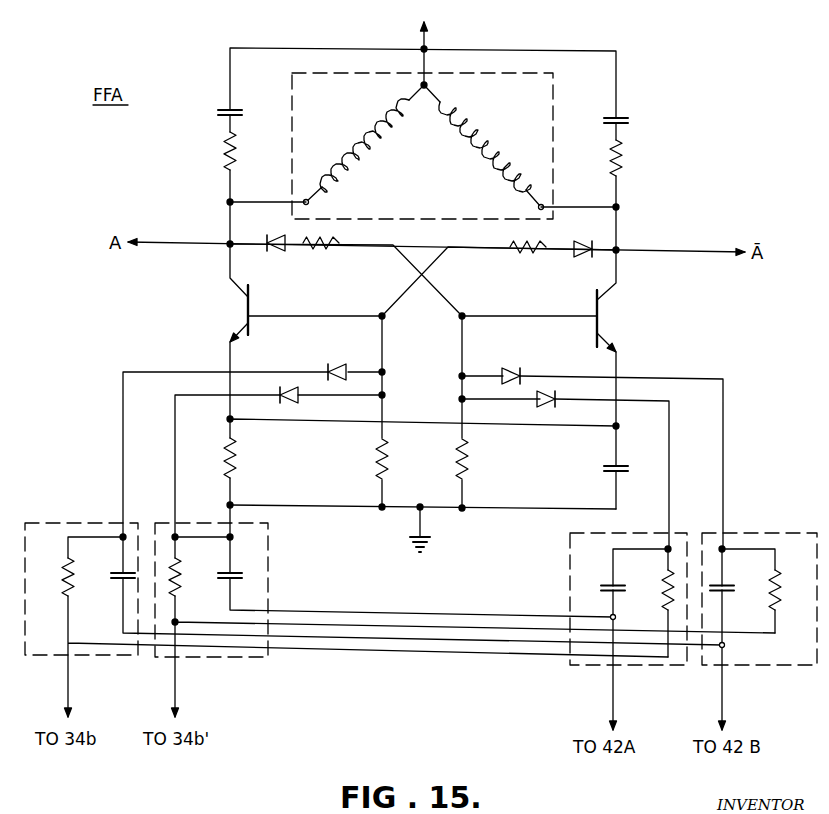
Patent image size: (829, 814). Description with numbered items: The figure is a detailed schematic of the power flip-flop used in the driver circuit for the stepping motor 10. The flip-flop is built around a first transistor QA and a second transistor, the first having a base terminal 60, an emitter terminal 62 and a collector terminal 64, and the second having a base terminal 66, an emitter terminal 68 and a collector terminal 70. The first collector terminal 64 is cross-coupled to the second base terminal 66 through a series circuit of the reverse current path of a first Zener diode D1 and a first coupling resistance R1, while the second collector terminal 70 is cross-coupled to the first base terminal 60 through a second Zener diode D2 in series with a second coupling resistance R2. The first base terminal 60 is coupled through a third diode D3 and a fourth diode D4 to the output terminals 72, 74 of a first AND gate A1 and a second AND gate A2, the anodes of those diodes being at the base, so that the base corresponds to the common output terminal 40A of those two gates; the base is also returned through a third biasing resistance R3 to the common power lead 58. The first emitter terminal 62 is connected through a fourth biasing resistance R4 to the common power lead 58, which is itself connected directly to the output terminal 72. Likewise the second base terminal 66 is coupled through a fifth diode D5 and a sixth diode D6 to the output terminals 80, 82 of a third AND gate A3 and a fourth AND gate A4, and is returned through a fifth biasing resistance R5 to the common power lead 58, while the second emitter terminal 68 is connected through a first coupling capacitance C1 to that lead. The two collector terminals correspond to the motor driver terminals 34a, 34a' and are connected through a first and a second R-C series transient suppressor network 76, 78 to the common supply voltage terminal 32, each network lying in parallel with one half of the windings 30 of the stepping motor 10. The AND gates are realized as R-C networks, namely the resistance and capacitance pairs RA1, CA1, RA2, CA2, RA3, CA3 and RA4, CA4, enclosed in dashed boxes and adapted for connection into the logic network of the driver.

The common supply voltage terminal 32 is at (431, 46).
The stepping motor 10 is at (556, 100).
The windings 30 is at (478, 118).
The first R-C series transient suppressor network 76 is at (246, 93).
The second R-C series transient suppressor network 78 is at (606, 95).
The motor driver terminal 34a is at (244, 201).
The motor driver terminal 34a' is at (606, 206).
The first collector terminal 64 is at (224, 249).
The second collector terminal 70 is at (620, 255).
The first base terminal 60 is at (382, 313).
The second base terminal 66 is at (463, 313).
The first emitter terminal 62 is at (225, 417).
The second emitter terminal 68 is at (622, 424).
The common output terminal 40A is at (408, 366).
The output terminal 74 is at (120, 530).
The output terminal 72 is at (178, 530).
The output terminal 80 is at (672, 542).
The output terminal 82 is at (726, 542).
The common power lead 58 is at (492, 511).
The first Zener diode D1 is at (280, 250).
The first coupling resistance R1 is at (330, 252).
The second coupling resistance R2 is at (532, 252).
The second Zener diode D2 is at (590, 255).
The first transistor means QA is at (243, 312).
The third diode D3 is at (292, 400).
The fourth diode D4 is at (342, 362).
The fifth diode D5 is at (540, 402).
The sixth diode D6 is at (512, 368).
The third biasing resistance R3 is at (390, 452).
The fourth biasing resistance R4 is at (238, 452).
The fifth biasing resistance R5 is at (470, 452).
The first coupling capacitance C1 is at (604, 467).
The first AND gate A1 is at (268, 545).
The second AND gate A2 is at (75, 523).
The third AND gate A3 is at (570, 594).
The fourth AND gate A4 is at (770, 533).
The resistance of AND gate R-C network RA1 is at (180, 580).
The resistance of AND gate R-C network RA2 is at (76, 576).
The resistance of AND gate R-C network RA3 is at (662, 580).
The resistance of AND gate R-C network RA4 is at (769, 580).
The capacitance of AND gate R-C network CA1 is at (218, 573).
The capacitance of AND gate R-C network CA2 is at (110, 573).
The capacitance of AND gate R-C network CA3 is at (628, 588).
The capacitance of AND gate R-C network CA4 is at (737, 588).